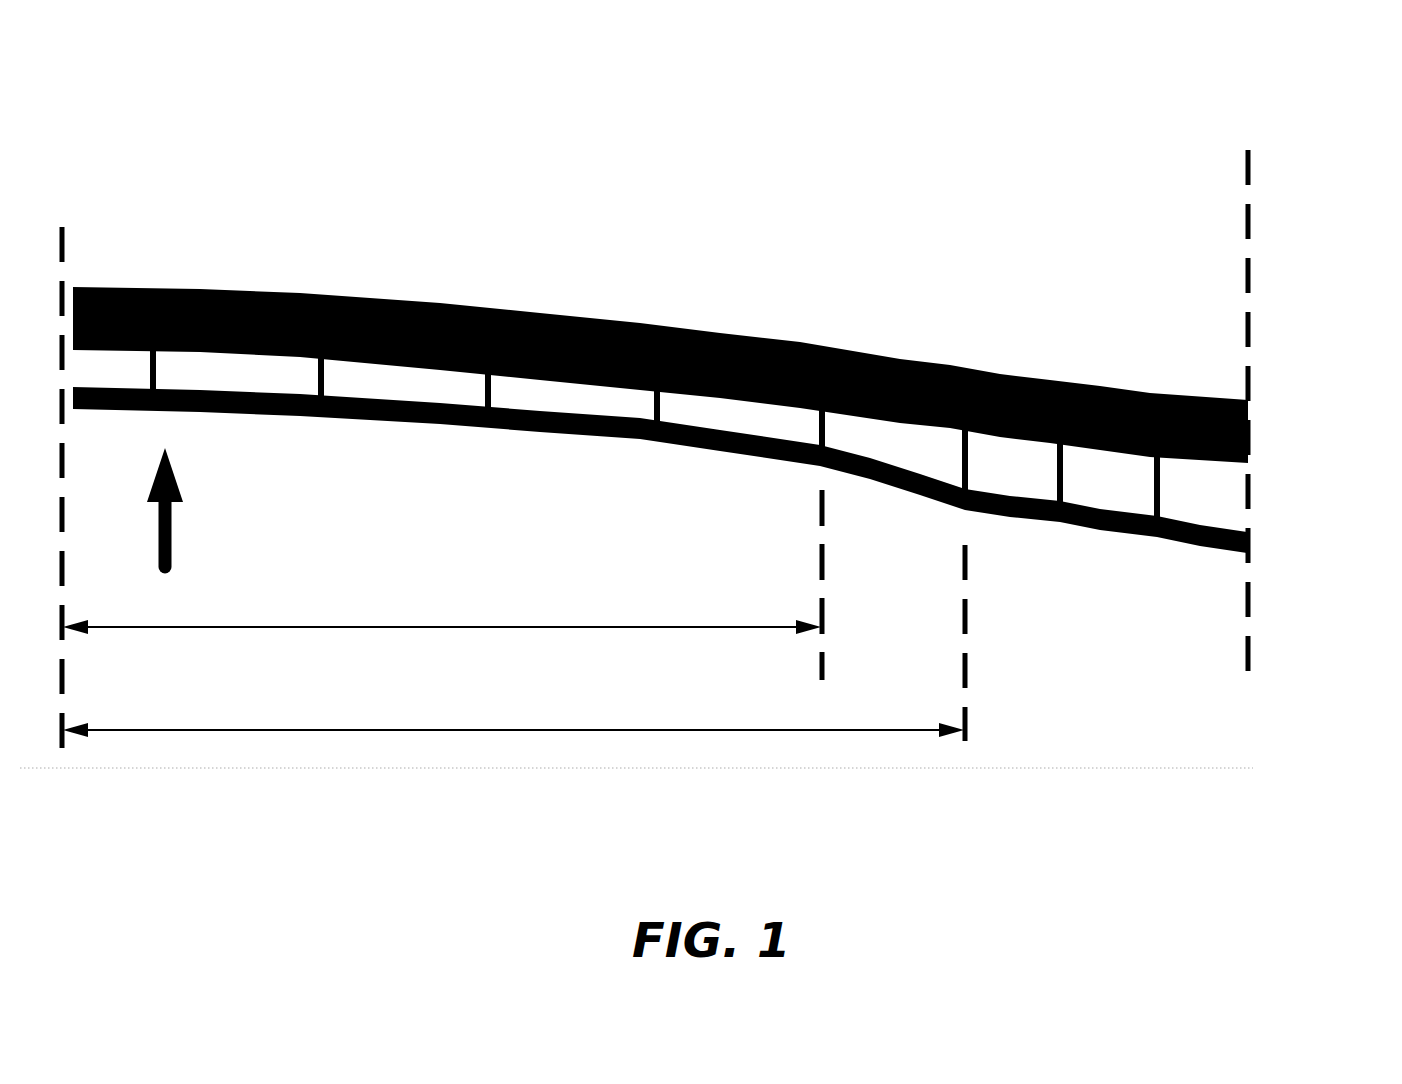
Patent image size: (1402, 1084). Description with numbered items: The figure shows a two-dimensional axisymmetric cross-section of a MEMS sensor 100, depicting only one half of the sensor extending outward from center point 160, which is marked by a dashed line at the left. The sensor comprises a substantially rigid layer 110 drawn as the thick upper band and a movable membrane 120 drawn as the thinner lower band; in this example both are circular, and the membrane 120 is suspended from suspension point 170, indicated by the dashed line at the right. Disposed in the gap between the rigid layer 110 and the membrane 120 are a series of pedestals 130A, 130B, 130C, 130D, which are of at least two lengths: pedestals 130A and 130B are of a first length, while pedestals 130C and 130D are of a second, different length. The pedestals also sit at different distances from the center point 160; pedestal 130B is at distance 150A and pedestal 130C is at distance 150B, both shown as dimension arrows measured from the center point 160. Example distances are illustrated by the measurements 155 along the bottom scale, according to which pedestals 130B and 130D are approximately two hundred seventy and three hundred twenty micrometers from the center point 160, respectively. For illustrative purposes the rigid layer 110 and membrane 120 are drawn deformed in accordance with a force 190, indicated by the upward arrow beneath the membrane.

The MEMS sensor 100 is at (142, 66).
The substantially rigid layer 110 is at (258, 292).
The movable membrane 120 is at (587, 435).
The pedestal 130A is at (492, 380).
The pedestal 130B is at (825, 428).
The pedestal 130C is at (965, 455).
The pedestal 130D is at (1160, 485).
The distance 150A is at (442, 585).
The distance 150B is at (514, 643).
The measurements 155 is at (1112, 787).
The center point 160 is at (62, 227).
The suspension point 170 is at (1248, 150).
The force 190 is at (194, 507).